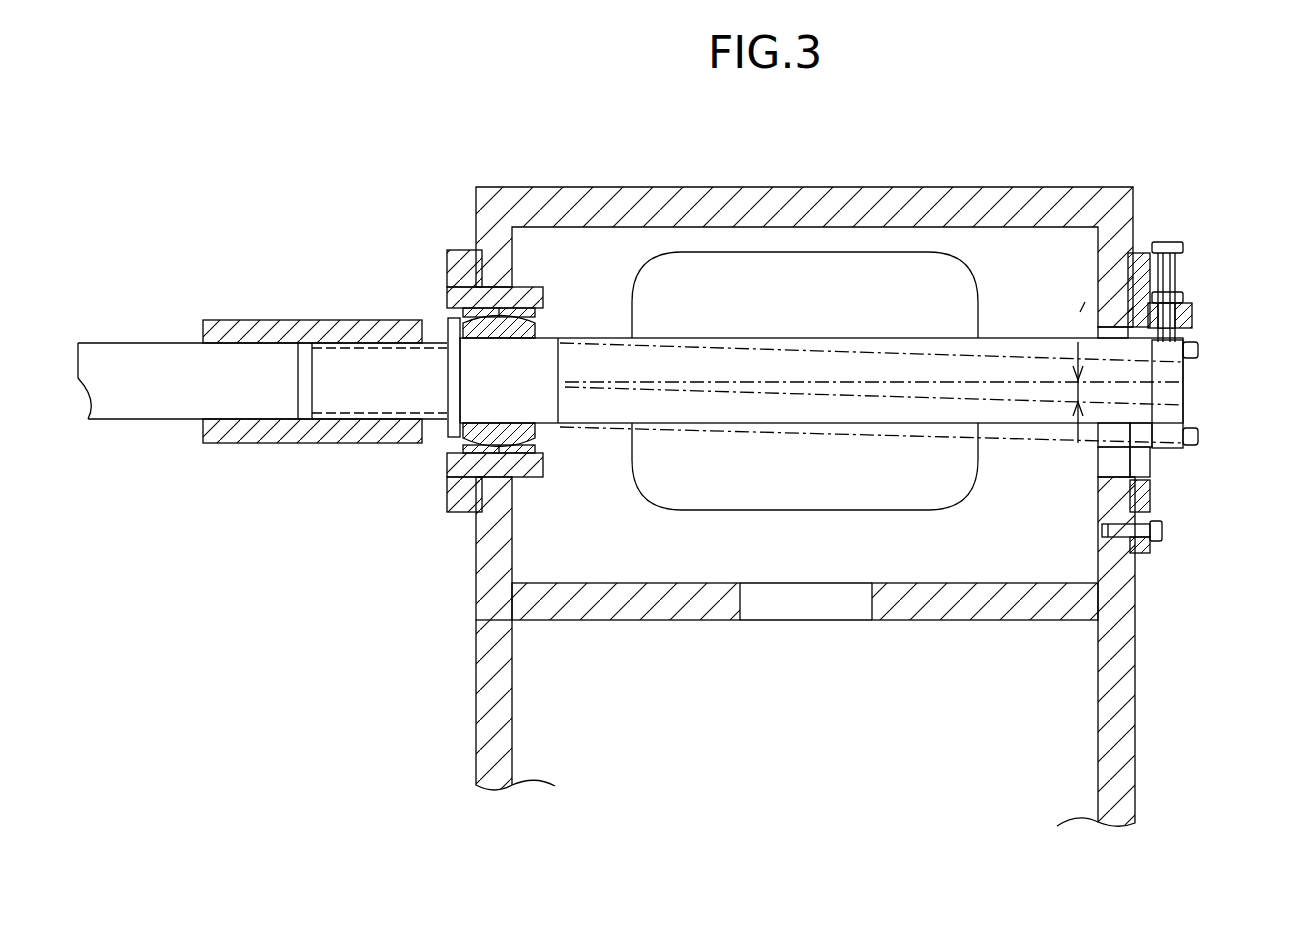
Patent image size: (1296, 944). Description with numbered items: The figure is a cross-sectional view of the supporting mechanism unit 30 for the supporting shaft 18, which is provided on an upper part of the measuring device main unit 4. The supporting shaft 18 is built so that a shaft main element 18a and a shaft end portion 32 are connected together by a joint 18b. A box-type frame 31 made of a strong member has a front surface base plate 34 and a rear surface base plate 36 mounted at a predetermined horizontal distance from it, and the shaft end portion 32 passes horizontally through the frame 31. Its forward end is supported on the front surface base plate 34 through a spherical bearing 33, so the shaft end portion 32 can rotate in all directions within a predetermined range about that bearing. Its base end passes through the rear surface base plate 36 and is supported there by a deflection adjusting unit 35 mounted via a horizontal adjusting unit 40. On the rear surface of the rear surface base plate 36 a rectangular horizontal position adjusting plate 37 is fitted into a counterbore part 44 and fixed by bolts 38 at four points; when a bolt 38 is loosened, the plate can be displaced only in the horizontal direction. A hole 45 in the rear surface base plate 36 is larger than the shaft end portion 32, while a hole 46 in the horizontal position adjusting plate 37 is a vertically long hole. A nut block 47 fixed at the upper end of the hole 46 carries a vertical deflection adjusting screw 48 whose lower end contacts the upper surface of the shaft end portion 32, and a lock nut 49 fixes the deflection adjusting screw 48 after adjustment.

The measuring device main unit 4 is at (783, 463).
The supporting shaft 18 is at (262, 359).
The shaft main element 18a is at (164, 343).
The joint 18b is at (318, 443).
The supporting mechanism unit 30 is at (915, 155).
The box-type frame 31 is at (477, 672).
The shaft end portion 32 is at (807, 338).
The spherical bearing 33 is at (447, 283).
The front surface base plate 34 is at (476, 568).
The deflection adjusting unit 35 is at (1193, 307).
The rear surface base plate 36 is at (1135, 668).
The horizontal position adjusting plate 37 is at (1140, 463).
The bolt 38 is at (1162, 533).
The horizontal adjusting unit 40 is at (1183, 566).
The counterbore part 44 is at (1150, 508).
The hole 45 is at (1097, 457).
The hole 46 is at (1192, 447).
The nut block 47 is at (1192, 320).
The deflection adjusting screw 48 is at (1178, 240).
The lock nut 49 is at (1198, 293).